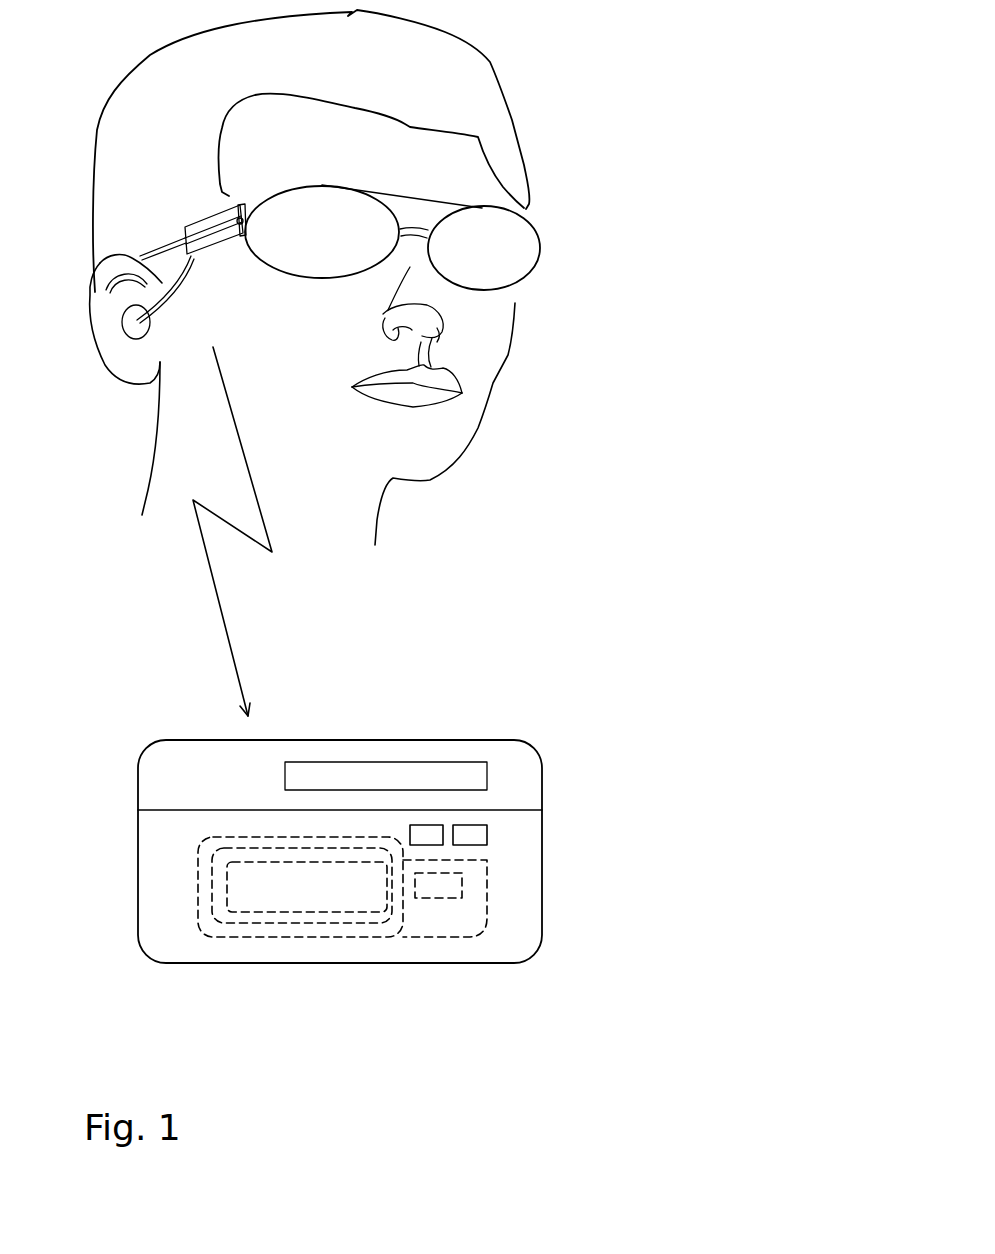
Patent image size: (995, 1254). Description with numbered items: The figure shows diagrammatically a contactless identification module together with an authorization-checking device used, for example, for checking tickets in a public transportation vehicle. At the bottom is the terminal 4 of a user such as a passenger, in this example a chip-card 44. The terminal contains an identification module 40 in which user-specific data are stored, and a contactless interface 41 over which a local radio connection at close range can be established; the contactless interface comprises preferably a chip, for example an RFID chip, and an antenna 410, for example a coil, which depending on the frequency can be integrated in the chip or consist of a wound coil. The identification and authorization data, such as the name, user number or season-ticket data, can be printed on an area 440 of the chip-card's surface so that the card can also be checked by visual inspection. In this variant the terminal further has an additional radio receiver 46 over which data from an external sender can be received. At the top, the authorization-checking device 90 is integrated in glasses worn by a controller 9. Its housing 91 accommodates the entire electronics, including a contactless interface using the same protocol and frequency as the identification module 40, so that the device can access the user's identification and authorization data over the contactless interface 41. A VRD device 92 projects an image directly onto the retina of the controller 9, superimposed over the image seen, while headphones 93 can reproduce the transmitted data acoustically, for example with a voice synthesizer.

The controller 9 is at (319, 363).
The authorization-checking device 90 is at (503, 248).
The housing 91 is at (212, 242).
The VRD device 92 is at (237, 219).
The headphones 93 is at (131, 323).
The terminal 4 is at (439, 903).
The chip-card 44 is at (168, 938).
The area 440 is at (386, 776).
The antenna 410 is at (268, 925).
The contactless interface 41 is at (438, 887).
The identification module 40 is at (472, 837).
The radio receiver 46 is at (428, 837).